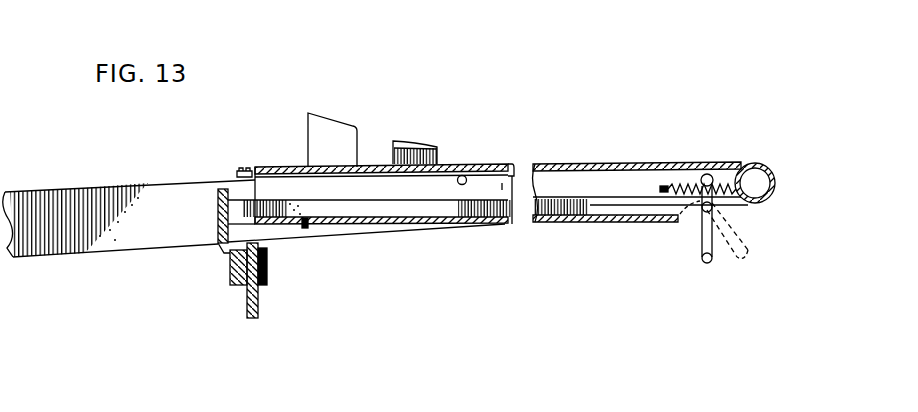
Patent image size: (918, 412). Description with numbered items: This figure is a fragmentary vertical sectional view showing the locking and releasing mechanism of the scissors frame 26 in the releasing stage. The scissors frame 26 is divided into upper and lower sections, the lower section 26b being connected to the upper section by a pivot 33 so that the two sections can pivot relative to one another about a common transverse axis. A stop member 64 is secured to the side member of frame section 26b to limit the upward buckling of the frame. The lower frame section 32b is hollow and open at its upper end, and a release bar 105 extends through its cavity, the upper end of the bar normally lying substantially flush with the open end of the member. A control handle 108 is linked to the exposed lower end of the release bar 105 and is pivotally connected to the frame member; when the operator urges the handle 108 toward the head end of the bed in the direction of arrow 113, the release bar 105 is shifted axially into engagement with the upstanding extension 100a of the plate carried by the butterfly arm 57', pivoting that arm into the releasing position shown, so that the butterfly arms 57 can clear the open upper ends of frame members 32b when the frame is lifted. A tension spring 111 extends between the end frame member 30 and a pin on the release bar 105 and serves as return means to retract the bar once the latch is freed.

The lower section of scissors frame 26b is at (58, 190).
The upwardly projecting portion of plate 100a is at (215, 208).
The butterfly arm 57' is at (218, 280).
The pivot 33 is at (473, 160).
The lower section of side frame member 32b is at (340, 227).
The stop member 64 is at (342, 125).
The butterfly arm 57 is at (416, 122).
The scissors frame 26 is at (568, 156).
The release bar 105 is at (535, 213).
The end frame member 30 is at (776, 178).
The tension spring 111 is at (680, 186).
The control handle 108 is at (703, 244).
The arrow 113 is at (726, 261).